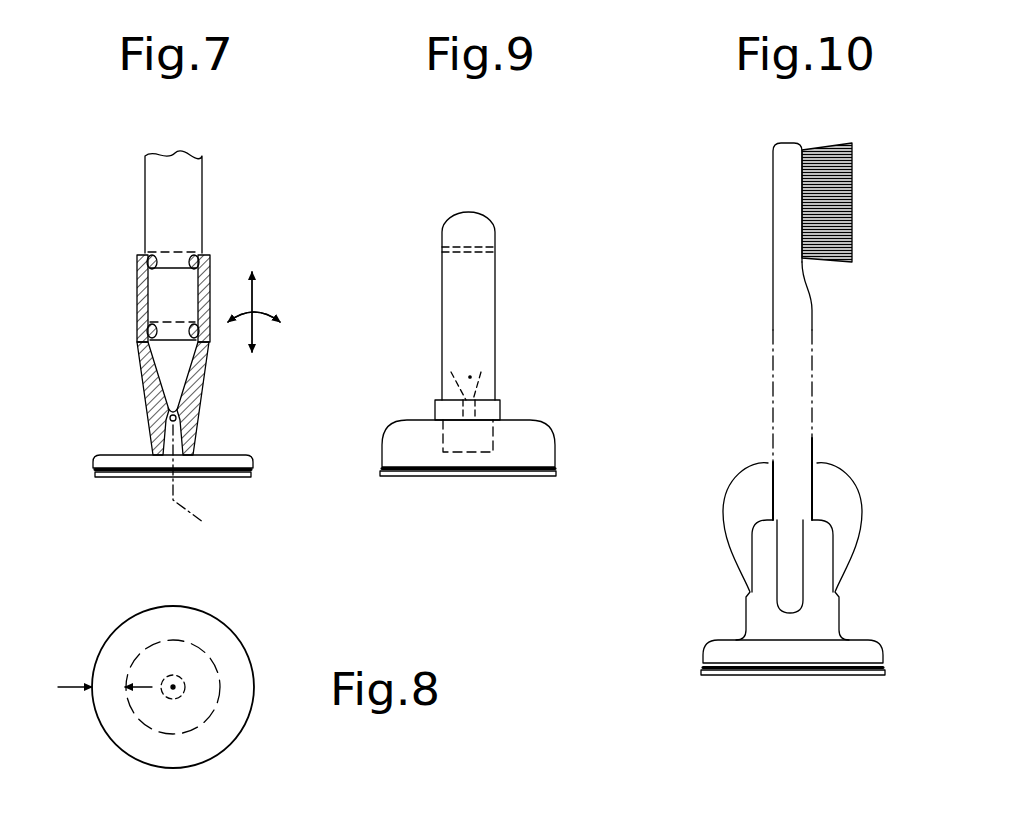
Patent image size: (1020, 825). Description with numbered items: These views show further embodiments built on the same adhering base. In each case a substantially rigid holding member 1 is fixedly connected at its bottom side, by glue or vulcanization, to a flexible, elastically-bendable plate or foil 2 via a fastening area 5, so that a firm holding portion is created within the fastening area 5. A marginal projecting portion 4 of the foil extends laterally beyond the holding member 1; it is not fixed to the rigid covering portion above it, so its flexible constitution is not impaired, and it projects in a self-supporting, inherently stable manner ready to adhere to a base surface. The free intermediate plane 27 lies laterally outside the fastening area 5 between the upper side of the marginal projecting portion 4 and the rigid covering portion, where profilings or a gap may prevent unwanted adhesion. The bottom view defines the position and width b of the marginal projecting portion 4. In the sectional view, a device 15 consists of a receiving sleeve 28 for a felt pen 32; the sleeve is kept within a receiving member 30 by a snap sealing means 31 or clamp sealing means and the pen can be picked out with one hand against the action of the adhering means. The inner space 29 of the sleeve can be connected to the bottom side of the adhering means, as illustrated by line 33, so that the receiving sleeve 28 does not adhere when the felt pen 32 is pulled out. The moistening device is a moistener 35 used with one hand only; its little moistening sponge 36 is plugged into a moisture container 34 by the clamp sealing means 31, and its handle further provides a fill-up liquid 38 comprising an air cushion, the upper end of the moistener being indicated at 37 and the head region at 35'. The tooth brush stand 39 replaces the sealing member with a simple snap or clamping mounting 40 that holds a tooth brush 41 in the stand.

In FIG. 7, the holding member 1 is at (118, 447).
In FIG. 9, the holding member 1 is at (400, 475).
In FIG. 10, the holding member 1 is at (732, 678).
In FIG. 7, the plate or foil 2 is at (128, 479).
In FIG. 8, the plate or foil 2 is at (243, 652).
In FIG. 9, the plate or foil 2 is at (468, 473).
In FIG. 7, the marginal projecting portion 4 is at (97, 477).
In FIG. 8, the marginal projecting portion 4 is at (228, 708).
In FIG. 9, the marginal projecting portion 4 is at (542, 473).
In FIG. 10, the marginal projecting portion 4 is at (705, 678).
In FIG. 7, the fastening area 5 is at (157, 477).
In FIG. 8, the fastening area 5 is at (187, 643).
In FIG. 9, the fastening area 5 is at (460, 473).
In FIG. 10, the fastening area 5 is at (803, 678).
In FIG. 7, the device 15 is at (133, 220).
In FIG. 9, the device 15 is at (515, 267).
In FIG. 7, the intermediate plane 27 is at (97, 468).
In FIG. 7, the receiving sleeve 28 is at (142, 380).
In FIG. 7, the inner space 29 is at (178, 433).
In FIG. 7, the receiving member 30 is at (210, 352).
In FIG. 7, the snap sealing means 31 is at (210, 258).
In FIG. 7, the felt pen 32 is at (190, 178).
In FIG. 7, the line 33 is at (204, 477).
In FIG. 8, the line 33 is at (172, 695).
In FIG. 7, the moisture container 34 is at (137, 295).
In FIG. 9, the moisture container 34 is at (497, 410).
In FIG. 9, the moistener 35 is at (437, 306).
In FIG. 9, the pin head 35' is at (462, 416).
In FIG. 9, the moistening sponge 36 is at (487, 440).
In FIG. 9, the cap 37 is at (477, 222).
In FIG. 9, the fill-up liquid 38 is at (460, 238).
In FIG. 10, the tooth brush stand 39 is at (720, 533).
In FIG. 10, the snap or clamping mounting 40 is at (812, 462).
In FIG. 10, the tooth brush 41 is at (778, 200).